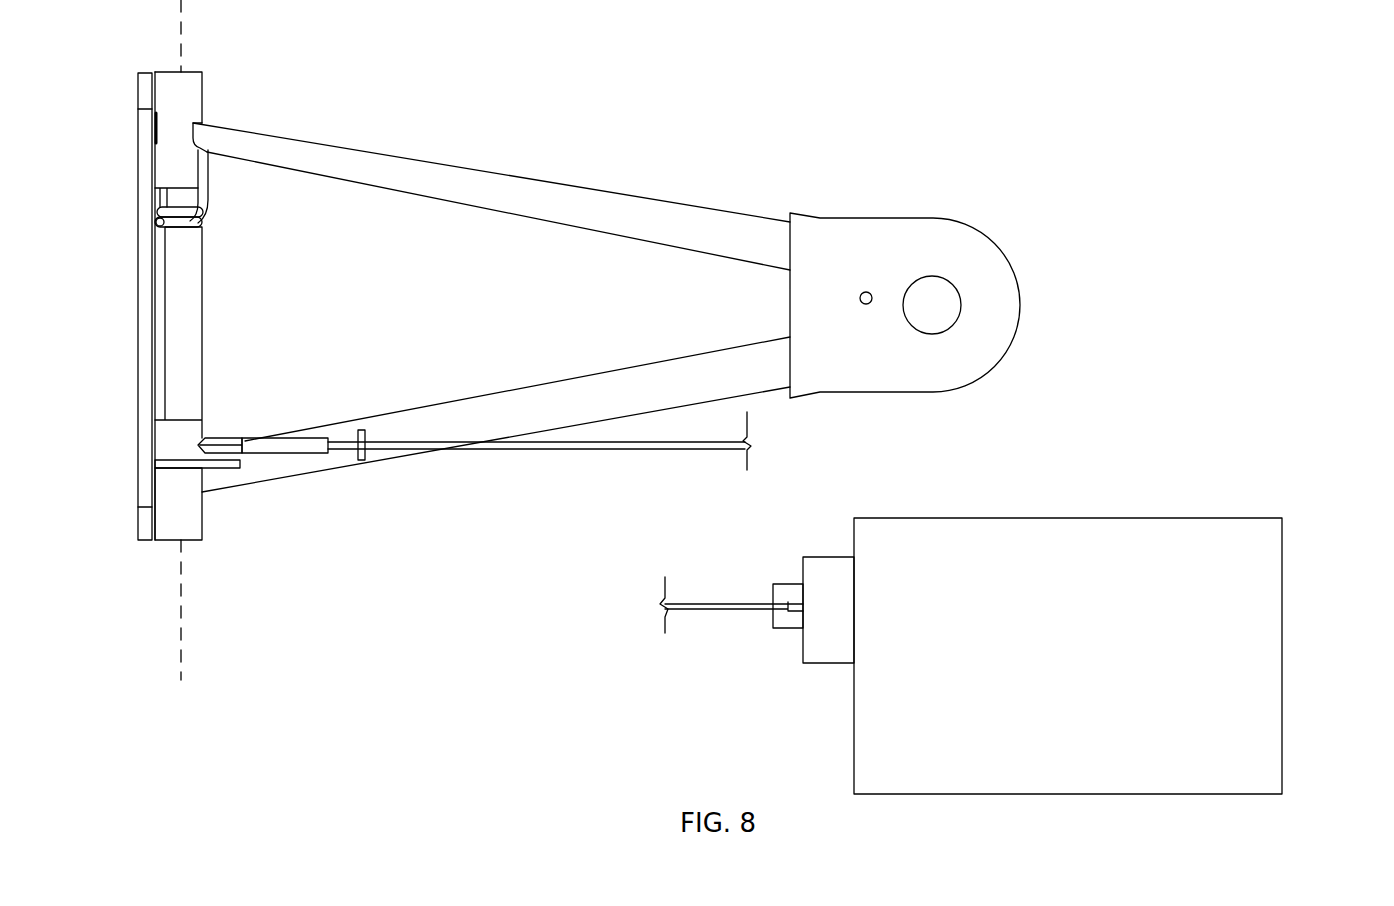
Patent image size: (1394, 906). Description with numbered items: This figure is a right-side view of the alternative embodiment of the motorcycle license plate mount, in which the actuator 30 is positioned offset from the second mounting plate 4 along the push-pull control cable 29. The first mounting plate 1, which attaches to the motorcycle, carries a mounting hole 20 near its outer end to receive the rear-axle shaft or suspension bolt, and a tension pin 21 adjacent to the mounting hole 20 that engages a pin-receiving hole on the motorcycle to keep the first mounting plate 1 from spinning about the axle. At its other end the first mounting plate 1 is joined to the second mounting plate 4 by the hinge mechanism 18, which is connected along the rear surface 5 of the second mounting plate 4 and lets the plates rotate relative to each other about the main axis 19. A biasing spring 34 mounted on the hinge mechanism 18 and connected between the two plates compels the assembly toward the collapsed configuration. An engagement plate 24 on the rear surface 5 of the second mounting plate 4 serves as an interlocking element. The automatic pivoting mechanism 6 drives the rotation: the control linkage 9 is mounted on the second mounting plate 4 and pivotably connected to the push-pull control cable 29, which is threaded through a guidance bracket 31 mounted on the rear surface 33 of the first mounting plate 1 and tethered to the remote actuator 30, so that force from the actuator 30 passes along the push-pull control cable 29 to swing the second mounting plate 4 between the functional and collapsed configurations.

The first mounting plate 1 is at (648, 222).
The second mounting plate 4 is at (145, 383).
The rear surface 5 is at (160, 287).
The automatic pivoting mechanism 6 is at (1313, 445).
The control linkage 9 is at (268, 436).
The hinge mechanism 18 is at (198, 515).
The main axis 19 is at (179, 640).
The mounting hole 20 is at (902, 295).
The tension pin 21 is at (862, 305).
The engagement plate 24 is at (228, 465).
The push-pull control cable 29 is at (590, 448).
The actuator 30 is at (793, 622).
The guidance bracket 31 is at (363, 458).
The rear surface 33 is at (794, 337).
The biasing spring 34 is at (198, 227).